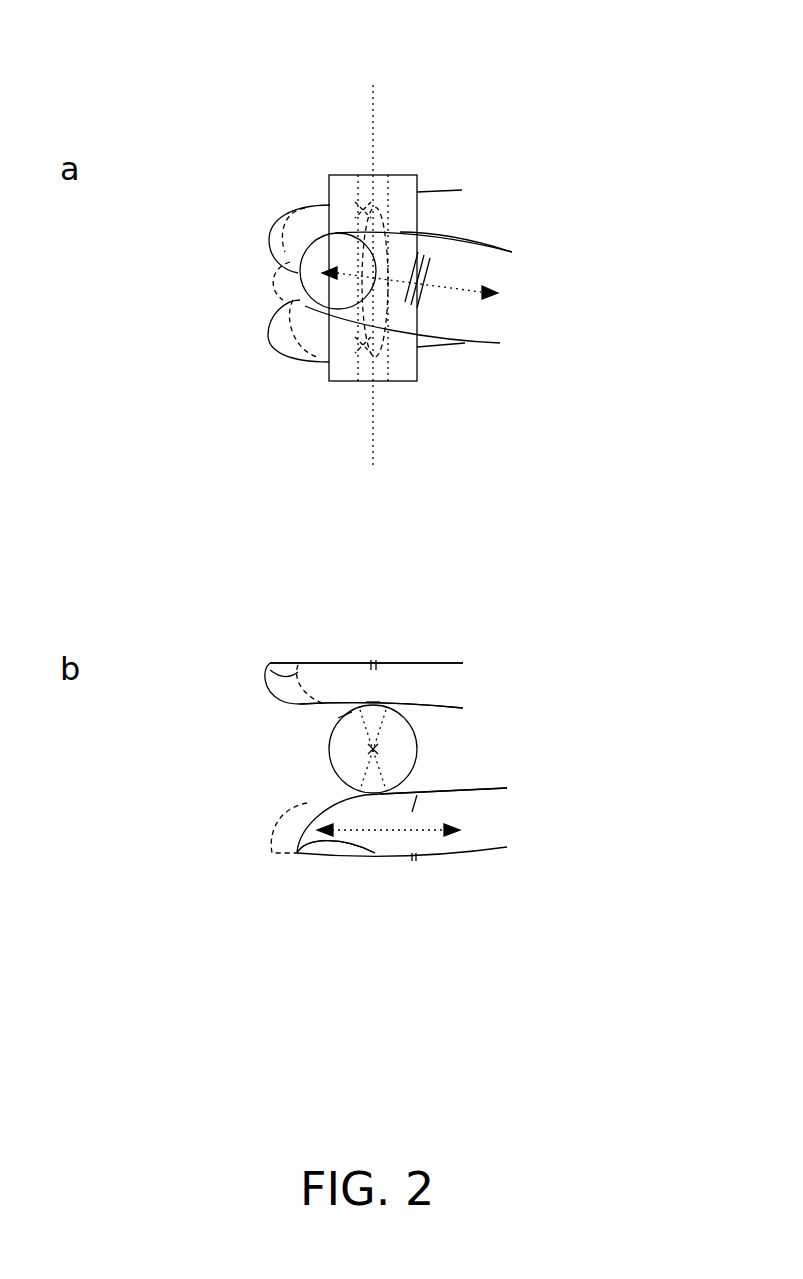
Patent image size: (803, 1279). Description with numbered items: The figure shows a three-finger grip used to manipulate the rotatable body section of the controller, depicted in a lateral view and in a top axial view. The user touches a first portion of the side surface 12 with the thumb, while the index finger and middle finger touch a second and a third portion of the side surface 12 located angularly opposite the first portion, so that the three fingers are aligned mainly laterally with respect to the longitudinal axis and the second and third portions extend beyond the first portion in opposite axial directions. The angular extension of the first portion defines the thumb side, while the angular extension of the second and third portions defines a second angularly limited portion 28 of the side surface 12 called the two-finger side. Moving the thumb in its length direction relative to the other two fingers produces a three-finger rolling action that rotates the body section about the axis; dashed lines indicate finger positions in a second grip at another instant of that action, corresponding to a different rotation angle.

The side surface 12 is at (397, 368).
The second angularly limited portion 28 is at (343, 716).